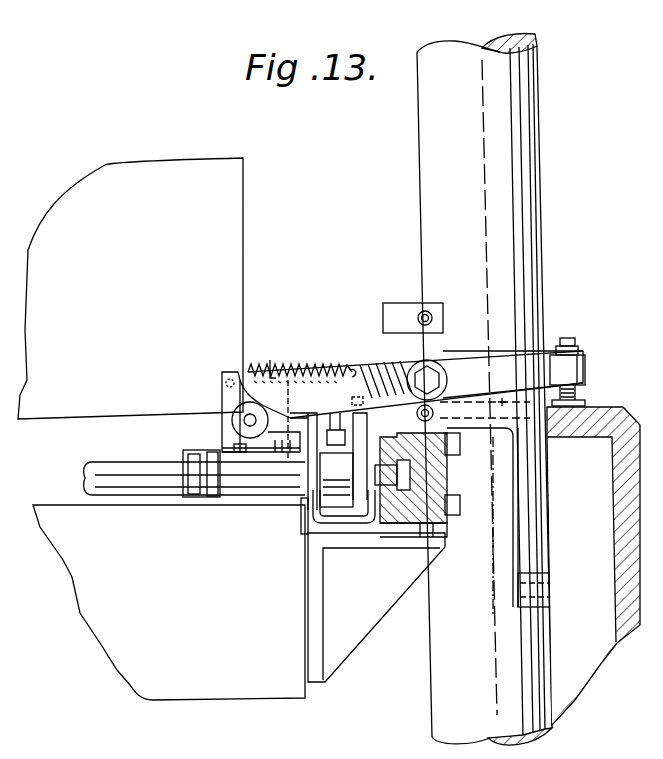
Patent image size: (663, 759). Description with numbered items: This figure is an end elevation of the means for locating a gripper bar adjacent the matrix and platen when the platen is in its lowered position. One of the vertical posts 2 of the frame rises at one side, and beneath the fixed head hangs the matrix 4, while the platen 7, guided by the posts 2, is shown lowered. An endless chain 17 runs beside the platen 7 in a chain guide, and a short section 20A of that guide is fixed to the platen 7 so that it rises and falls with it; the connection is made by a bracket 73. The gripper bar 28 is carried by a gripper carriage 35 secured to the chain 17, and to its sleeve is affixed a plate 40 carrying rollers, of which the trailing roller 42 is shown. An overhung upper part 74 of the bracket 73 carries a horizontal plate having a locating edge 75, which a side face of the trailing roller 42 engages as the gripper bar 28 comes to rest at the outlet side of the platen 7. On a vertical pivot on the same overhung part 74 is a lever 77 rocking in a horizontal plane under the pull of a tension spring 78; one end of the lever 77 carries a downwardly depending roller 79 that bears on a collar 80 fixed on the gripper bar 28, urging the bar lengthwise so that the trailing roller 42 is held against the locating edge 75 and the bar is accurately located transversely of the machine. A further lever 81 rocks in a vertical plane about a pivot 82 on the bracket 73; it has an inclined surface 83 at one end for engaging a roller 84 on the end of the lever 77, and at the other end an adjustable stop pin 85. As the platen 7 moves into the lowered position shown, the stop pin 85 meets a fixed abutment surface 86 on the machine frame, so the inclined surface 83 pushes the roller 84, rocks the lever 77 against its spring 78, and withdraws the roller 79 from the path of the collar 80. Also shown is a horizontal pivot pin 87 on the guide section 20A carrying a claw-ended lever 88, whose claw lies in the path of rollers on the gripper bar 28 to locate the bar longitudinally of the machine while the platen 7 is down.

The vertical post 2 is at (438, 246).
The matrix 4 is at (130, 288).
The platen 7 is at (169, 602).
The endless chain 17 is at (390, 500).
The chain guide section 20A is at (447, 484).
The gripper bar 28 is at (125, 468).
The gripper carriage 35 is at (303, 530).
The plate 40 is at (316, 465).
The trailing roller 42 is at (318, 516).
The bracket 73 is at (376, 607).
The overhung upper part 74 is at (343, 338).
The locating edge 75 is at (282, 455).
The lever 77 is at (226, 391).
The tension spring 78 is at (323, 333).
The roller 79 is at (239, 454).
The collar 80 is at (214, 485).
The further lever 81 is at (460, 362).
The pivot 82 is at (427, 376).
The inclined surface 83 is at (272, 372).
The roller 84 is at (236, 422).
The adjustable stop pin 85 is at (563, 340).
The fixed abutment surface 86 is at (583, 405).
The horizontal pivot pin 87 is at (503, 398).
The claw-ended lever 88 is at (447, 464).